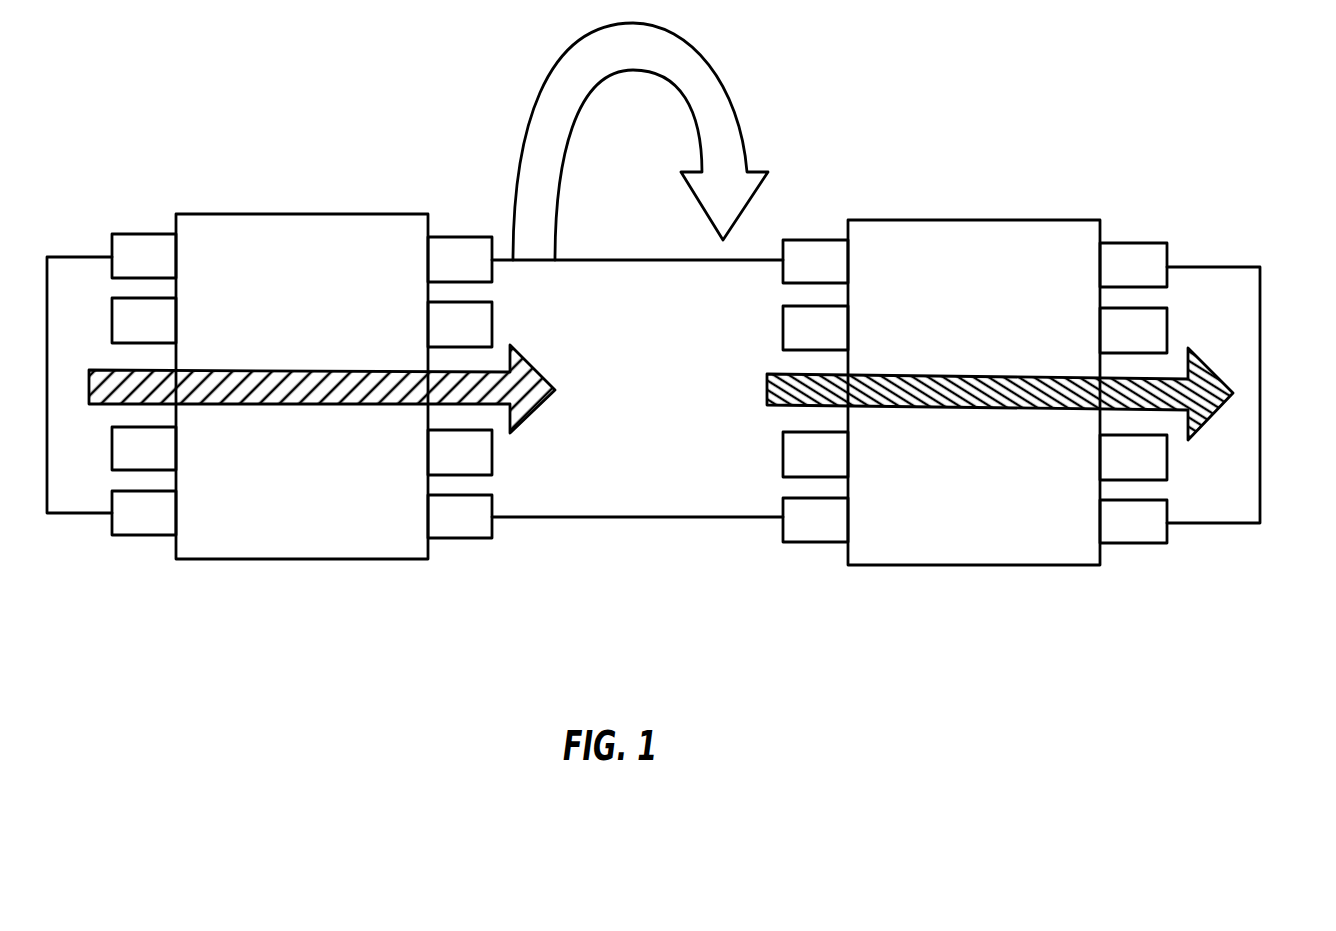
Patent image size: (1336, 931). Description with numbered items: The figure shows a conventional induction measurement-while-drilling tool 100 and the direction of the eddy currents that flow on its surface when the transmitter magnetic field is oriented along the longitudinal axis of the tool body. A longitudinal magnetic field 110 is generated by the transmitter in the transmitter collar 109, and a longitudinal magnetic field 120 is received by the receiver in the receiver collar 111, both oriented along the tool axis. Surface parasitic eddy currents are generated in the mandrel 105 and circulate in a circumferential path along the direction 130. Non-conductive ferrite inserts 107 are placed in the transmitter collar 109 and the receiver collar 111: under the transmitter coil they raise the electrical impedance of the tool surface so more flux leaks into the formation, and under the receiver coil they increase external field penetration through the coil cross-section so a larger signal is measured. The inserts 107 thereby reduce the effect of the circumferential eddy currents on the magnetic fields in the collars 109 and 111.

The tool 100 is at (680, 314).
The mandrel 105 is at (1228, 264).
The non-conductive ferrite inserts 107 is at (462, 525).
The transmitter collar 109 is at (308, 540).
The longitudinal magnetic field 110 is at (348, 370).
The receiver collar 111 is at (978, 548).
The longitudinal magnetic field 120 is at (913, 373).
The direction of eddy currents 130 is at (708, 78).